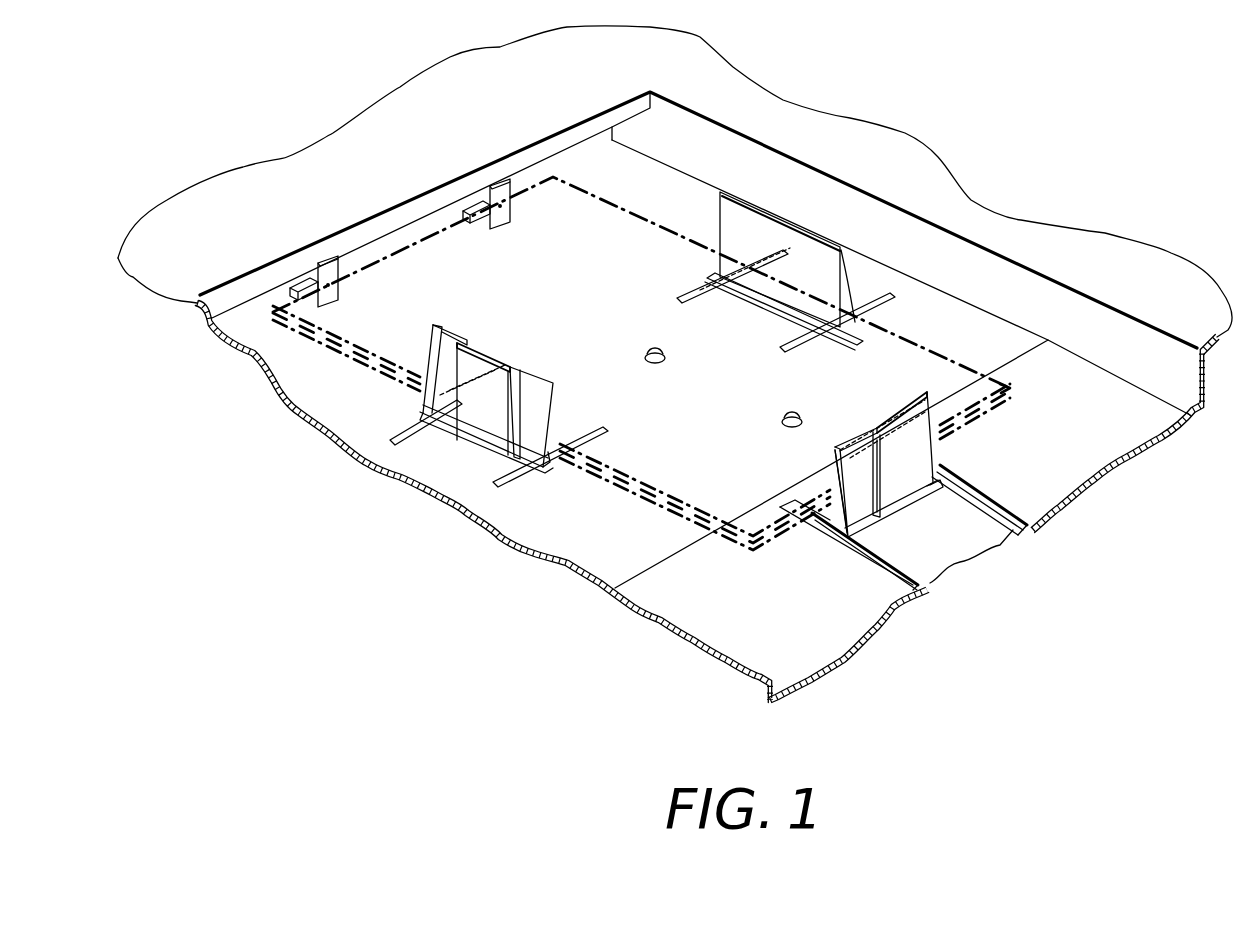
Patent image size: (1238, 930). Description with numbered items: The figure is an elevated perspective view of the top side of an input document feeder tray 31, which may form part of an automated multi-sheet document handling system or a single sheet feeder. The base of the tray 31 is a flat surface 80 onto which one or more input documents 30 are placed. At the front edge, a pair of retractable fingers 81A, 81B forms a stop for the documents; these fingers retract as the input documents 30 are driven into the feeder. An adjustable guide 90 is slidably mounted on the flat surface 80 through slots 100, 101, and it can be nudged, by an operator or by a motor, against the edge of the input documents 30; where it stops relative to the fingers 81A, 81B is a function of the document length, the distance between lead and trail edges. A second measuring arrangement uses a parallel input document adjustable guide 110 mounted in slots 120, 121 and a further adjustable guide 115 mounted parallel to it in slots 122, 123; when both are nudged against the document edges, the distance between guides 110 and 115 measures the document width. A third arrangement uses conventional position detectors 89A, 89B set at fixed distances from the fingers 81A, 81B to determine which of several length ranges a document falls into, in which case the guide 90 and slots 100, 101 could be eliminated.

The input document feeder tray 31 is at (342, 108).
The flat surface 80 is at (937, 312).
The finger 81A is at (325, 272).
The finger 81B is at (503, 193).
The input documents 30 is at (588, 228).
The parallel input document adjustable guide 110 is at (800, 252).
The slot 120 is at (690, 295).
The slot 121 is at (790, 343).
The adjustable guide 115 is at (552, 430).
The slot 122 is at (410, 427).
The slot 123 is at (513, 472).
The position detector 89A is at (653, 347).
The position detector 89B is at (793, 413).
The adjustable guide 90 is at (848, 433).
The slot 100 is at (1023, 538).
The slot 101 is at (928, 597).